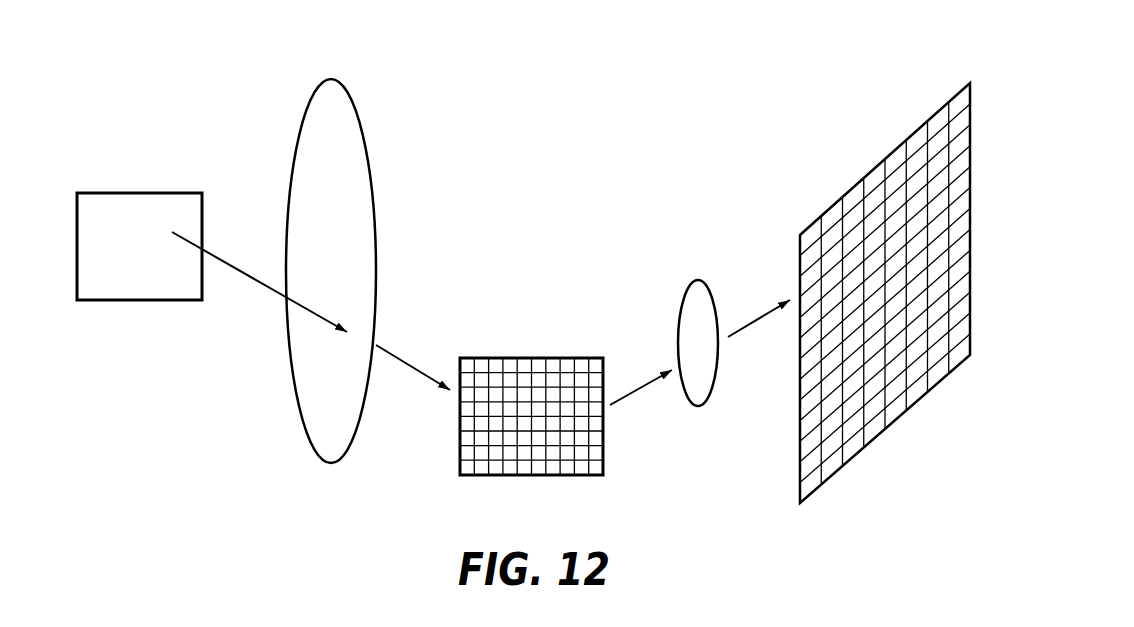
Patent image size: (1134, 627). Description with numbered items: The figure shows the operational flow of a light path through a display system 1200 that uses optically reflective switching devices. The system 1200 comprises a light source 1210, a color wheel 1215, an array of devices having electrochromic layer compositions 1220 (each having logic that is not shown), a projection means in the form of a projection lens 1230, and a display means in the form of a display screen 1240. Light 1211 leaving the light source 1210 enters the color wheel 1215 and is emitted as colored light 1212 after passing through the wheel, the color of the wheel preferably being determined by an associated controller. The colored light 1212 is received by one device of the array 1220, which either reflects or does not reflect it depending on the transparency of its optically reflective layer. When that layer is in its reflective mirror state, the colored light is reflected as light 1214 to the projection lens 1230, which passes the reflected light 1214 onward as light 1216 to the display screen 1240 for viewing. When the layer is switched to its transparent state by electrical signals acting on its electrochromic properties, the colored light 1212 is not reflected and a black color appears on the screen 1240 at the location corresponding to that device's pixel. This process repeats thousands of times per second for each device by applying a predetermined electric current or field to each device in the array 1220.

The display system 1200 is at (722, 73).
The light source 1210 is at (137, 301).
The light from the light source 1211 is at (203, 251).
The colored light emitted from the color wheel 1212 is at (380, 348).
The reflected light 1214 is at (620, 400).
The color wheel 1215 is at (377, 210).
The light beam to display 1216 is at (771, 317).
The array of devices having electrochromic layer compositions 1220 is at (522, 476).
The projection lens 1230 is at (683, 300).
The display screen 1240 is at (890, 425).